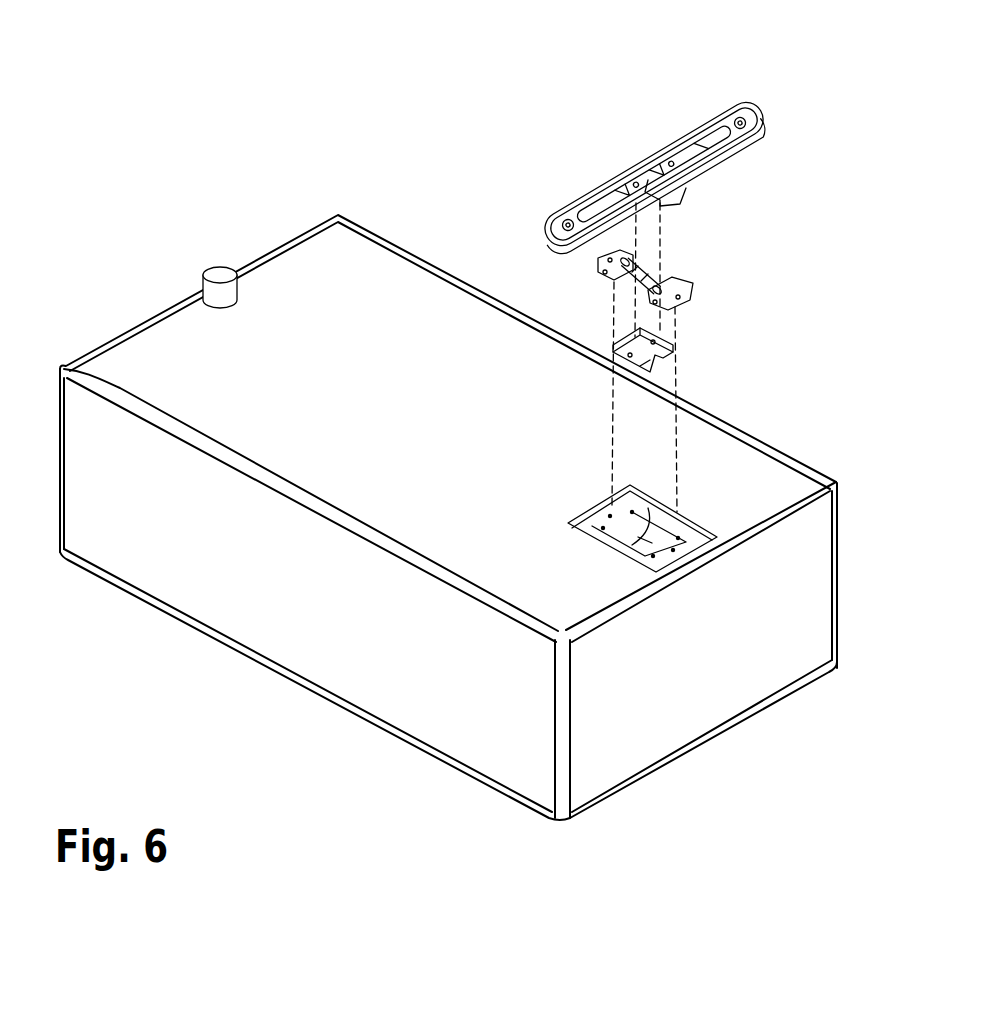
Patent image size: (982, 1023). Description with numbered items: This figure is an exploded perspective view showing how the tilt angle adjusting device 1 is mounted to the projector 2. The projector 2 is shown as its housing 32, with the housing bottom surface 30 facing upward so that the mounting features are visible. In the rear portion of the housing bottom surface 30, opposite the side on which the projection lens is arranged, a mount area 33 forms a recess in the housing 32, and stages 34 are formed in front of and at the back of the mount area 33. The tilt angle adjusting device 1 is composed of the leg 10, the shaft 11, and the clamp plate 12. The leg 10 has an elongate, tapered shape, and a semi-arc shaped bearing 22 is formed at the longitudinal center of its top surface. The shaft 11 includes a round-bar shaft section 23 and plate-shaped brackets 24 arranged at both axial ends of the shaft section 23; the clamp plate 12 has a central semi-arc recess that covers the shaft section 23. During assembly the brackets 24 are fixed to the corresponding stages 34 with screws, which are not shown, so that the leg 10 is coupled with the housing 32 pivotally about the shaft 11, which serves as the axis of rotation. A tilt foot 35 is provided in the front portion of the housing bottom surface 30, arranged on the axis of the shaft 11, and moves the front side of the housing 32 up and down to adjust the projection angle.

The tilt angle adjusting device 1 is at (699, 201).
The projector 2 is at (385, 760).
The leg 10 is at (747, 105).
The shaft 11 is at (669, 274).
The clamp plate 12 is at (682, 351).
The bearing 22 is at (667, 195).
The shaft section 23 is at (660, 262).
The brackets 24 is at (598, 265).
The housing bottom surface 30 is at (415, 310).
The housing 32 is at (488, 297).
The mount area 33 is at (678, 527).
The stages 34 is at (590, 522).
The tilt foot 35 is at (220, 270).